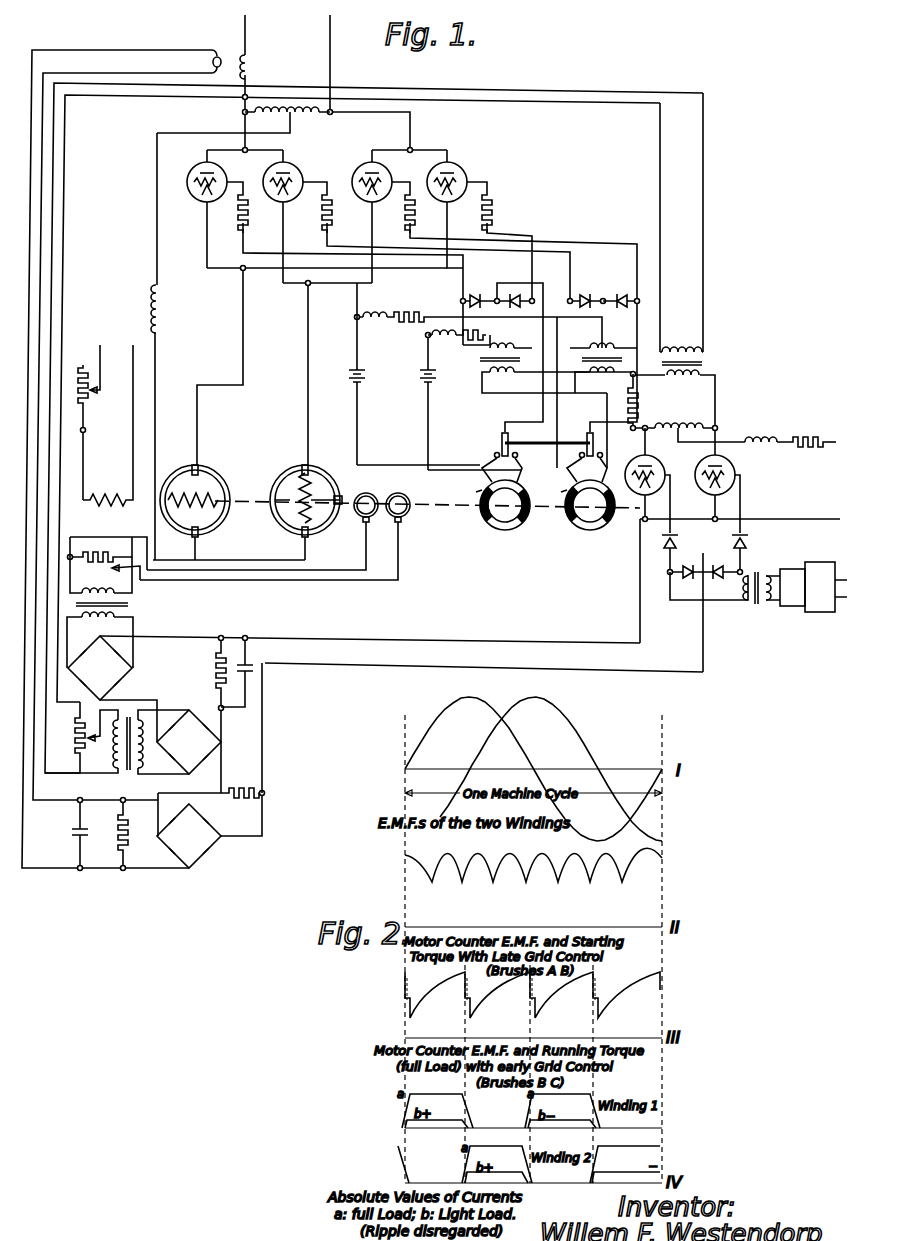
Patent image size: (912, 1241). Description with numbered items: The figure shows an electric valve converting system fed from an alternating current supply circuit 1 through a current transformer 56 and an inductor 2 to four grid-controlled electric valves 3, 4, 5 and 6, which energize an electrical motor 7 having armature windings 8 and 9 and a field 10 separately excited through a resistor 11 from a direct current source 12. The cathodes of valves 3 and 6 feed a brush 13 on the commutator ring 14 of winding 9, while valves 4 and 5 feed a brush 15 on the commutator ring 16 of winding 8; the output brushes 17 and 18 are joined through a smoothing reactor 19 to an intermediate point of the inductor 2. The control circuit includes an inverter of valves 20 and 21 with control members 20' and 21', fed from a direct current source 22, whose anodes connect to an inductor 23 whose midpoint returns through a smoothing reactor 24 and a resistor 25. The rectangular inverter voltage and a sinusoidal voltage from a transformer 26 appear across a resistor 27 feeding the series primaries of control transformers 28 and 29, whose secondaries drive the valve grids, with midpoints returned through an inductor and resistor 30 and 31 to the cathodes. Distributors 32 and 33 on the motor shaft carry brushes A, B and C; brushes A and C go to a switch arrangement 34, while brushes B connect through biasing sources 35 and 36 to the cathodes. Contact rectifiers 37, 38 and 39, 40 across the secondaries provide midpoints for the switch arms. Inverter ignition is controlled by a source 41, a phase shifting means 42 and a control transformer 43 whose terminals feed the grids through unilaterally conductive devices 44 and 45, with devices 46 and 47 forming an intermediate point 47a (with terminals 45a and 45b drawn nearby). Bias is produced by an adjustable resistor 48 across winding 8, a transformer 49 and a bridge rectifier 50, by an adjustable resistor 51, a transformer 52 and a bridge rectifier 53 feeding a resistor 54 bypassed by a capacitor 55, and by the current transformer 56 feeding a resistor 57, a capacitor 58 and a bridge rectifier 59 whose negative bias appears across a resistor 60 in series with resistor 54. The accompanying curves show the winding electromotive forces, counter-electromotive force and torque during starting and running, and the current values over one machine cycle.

The alternating current supply circuit 1 is at (265, 20).
The inductor 2 is at (305, 117).
The electric valve 3 is at (219, 171).
The electric valve 4 is at (294, 171).
The electric valve 5 is at (384, 171).
The electric valve 6 is at (460, 171).
The electrical motor 7 is at (250, 533).
The armature winding 8 is at (296, 487).
The armature winding 9 is at (212, 492).
The field 10 is at (110, 493).
The resistor 11 is at (89, 396).
The direct current source 12 is at (107, 364).
The brush 13 is at (195, 463).
The commutator ring 14 is at (166, 476).
The brush 15 is at (307, 463).
The commutator ring 16 is at (322, 473).
The output brush 17 is at (190, 540).
The output brush 18 is at (309, 540).
The smoothing reactor 19 is at (162, 305).
The electric valve 20 is at (653, 490).
The control member 20' is at (629, 443).
The electric valve 21 is at (723, 490).
The control member 21' is at (695, 523).
The source of direct current 22 is at (828, 519).
The inductor 23 is at (672, 422).
The smoothing reactor 24 is at (755, 438).
The resistor 25 is at (804, 438).
The transformer 26 is at (706, 360).
The resistor 27 is at (640, 410).
The control transformer 28 is at (515, 360).
The control transformer 29 is at (626, 360).
The inductor and resistor 30 is at (466, 347).
The inductor and resistor 31 is at (408, 326).
The distributor 32 is at (516, 526).
The distributor 33 is at (582, 526).
The switch arrangement 34 is at (545, 441).
The source of biasing voltage 35 is at (424, 385).
The source of biasing voltage 36 is at (359, 389).
The contact rectifier 37 is at (480, 291).
The contact rectifier 38 is at (506, 296).
The contact rectifier 39 is at (597, 296).
The contact rectifier 40 is at (623, 306).
The source of alternating current 41 is at (846, 574).
The phase shifting means 42 is at (820, 597).
The control transformer 43 is at (752, 604).
The unilaterally conductive device 44 is at (677, 540).
The unilaterally conductive device 45 is at (747, 540).
The connection 45a is at (747, 571).
The connection 45b is at (670, 580).
The unilaterally conductive device 46 is at (683, 564).
The unilaterally conductive device 47 is at (720, 564).
The intermediate point 47a is at (700, 548).
The adjustable resistor 48 is at (116, 556).
The transformer 49 is at (130, 603).
The bridge rectifier 50 is at (108, 675).
The adjustable resistor 51 is at (72, 742).
The transformer 52 is at (134, 750).
The bridge rectifier 53 is at (196, 750).
The resistor 54 is at (214, 666).
The capacitor 55 is at (251, 668).
The current transformer 56 is at (232, 58).
The resistor 57 is at (118, 838).
The capacitor 58 is at (70, 842).
The bridge rectifier 59 is at (196, 844).
The resistor 60 is at (250, 789).